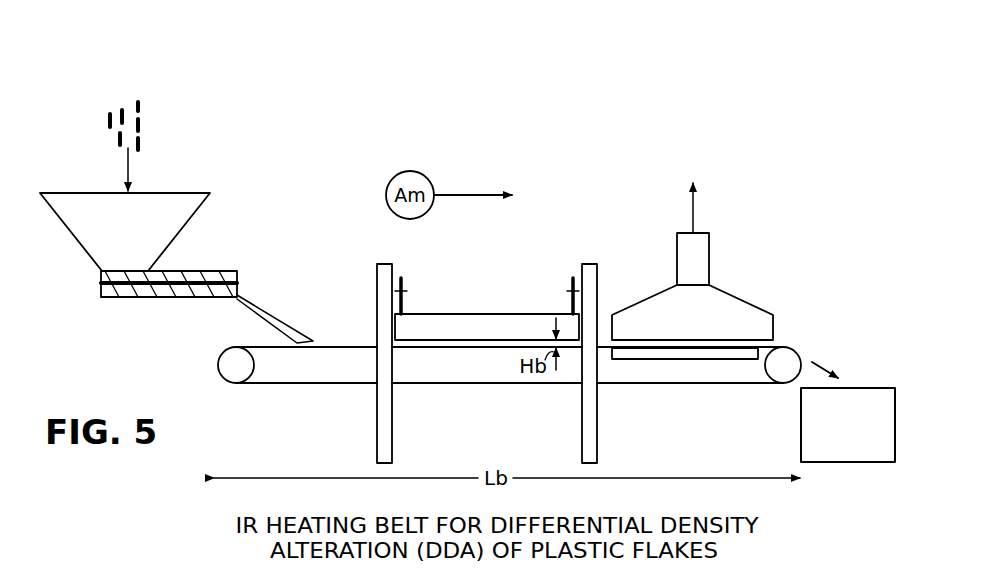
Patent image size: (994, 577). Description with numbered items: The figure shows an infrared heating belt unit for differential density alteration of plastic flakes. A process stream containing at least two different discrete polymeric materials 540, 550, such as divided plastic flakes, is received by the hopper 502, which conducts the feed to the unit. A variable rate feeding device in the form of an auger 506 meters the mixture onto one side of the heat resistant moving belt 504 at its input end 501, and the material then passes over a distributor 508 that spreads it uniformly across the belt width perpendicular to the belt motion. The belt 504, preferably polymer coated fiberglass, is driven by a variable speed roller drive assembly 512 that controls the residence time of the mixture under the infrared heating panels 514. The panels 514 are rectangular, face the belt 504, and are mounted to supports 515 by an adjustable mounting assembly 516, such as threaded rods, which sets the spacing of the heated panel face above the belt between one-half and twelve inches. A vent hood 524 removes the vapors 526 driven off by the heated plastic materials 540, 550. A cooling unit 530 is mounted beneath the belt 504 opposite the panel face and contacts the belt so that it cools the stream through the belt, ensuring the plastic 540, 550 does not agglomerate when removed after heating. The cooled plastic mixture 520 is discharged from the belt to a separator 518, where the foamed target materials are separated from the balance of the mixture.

The input end 501 is at (263, 347).
The hopper 502 is at (105, 240).
The heat resistant moving belt 504 is at (346, 347).
The auger 506 is at (165, 298).
The distributor 508 is at (277, 318).
The variable speed roller drive assembly 512 is at (794, 347).
The infrared heating panels 514 is at (517, 313).
The supports 515 is at (377, 415).
The adjustable mounting assembly 516 is at (404, 292).
The separator 518 is at (823, 439).
The cooled plastic mixture 520 is at (812, 362).
The vent hood 524 is at (665, 325).
The vapors 526 is at (695, 212).
The cooling unit 530 is at (678, 360).
The polymeric material 540 is at (140, 108).
The polymeric material 550 is at (142, 128).